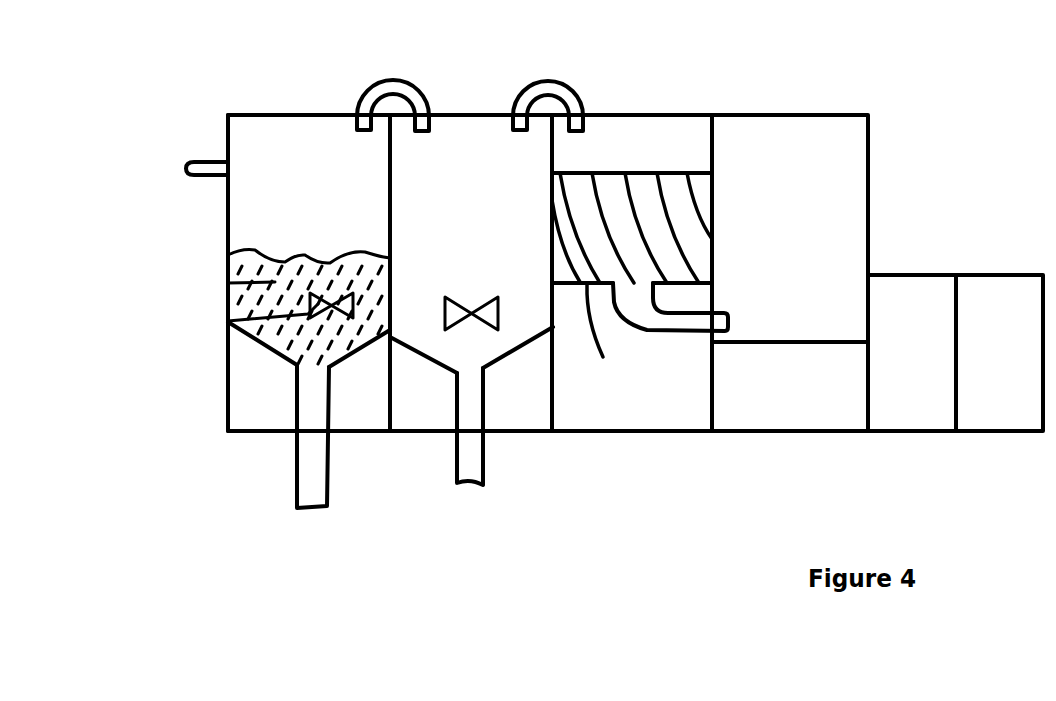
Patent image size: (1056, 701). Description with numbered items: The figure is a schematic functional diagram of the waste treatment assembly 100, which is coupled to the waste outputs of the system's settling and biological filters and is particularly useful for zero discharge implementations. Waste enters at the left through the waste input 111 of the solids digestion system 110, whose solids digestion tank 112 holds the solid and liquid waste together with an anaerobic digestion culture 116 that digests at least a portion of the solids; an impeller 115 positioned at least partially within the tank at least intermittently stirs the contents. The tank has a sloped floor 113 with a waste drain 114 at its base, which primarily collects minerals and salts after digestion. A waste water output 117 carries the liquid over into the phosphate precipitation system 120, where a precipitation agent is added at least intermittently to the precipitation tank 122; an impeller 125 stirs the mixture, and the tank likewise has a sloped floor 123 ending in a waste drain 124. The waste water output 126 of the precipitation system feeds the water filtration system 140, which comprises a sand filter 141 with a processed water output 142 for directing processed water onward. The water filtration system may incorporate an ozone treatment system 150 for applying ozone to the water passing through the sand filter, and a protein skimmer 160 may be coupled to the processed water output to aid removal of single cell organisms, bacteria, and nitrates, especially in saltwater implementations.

The waste treatment assembly 100 is at (274, 35).
The solids digestion system 110 is at (309, 273).
The waste input 111 is at (207, 157).
The solids digestion tank 112 is at (228, 236).
The sloped floor 113 is at (277, 353).
The waste drain 114 is at (290, 480).
The impeller 115 is at (228, 325).
The anaerobic digestion culture 116 is at (228, 283).
The waste water output 117 is at (397, 80).
The phosphate precipitation system 120 is at (501, 273).
The precipitation tank 122 is at (462, 112).
The sloped floor 123 is at (503, 358).
The waste drain 124 is at (483, 480).
The impeller 125 is at (447, 325).
The waste water output 126 is at (555, 76).
The water filtration system 140 is at (632, 211).
The sand filter 141 is at (603, 357).
The processed water output 142 is at (670, 337).
The ozone treatment system 150 is at (790, 386).
The protein skimmer 160 is at (790, 273).